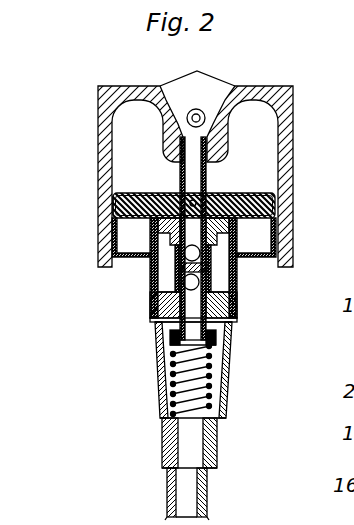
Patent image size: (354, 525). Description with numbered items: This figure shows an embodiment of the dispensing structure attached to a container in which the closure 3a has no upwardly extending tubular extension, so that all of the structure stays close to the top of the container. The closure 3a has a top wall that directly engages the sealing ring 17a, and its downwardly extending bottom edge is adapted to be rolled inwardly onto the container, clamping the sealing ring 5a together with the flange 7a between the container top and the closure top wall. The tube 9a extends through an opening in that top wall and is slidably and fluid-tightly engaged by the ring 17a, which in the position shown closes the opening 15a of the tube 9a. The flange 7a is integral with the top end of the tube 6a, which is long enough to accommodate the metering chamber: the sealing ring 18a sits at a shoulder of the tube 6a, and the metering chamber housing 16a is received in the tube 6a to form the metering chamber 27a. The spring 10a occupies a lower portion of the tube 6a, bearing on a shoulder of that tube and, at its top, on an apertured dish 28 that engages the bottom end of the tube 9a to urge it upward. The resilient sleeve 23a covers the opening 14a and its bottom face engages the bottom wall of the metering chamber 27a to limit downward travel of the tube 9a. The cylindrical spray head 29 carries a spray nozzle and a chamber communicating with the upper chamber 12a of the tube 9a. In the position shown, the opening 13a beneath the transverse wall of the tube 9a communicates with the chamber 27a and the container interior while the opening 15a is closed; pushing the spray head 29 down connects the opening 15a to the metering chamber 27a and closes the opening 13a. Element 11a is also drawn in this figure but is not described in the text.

The spray head 29 is at (270, 97).
The sealing ring 17a is at (155, 192).
The flange 7a is at (117, 192).
The sealing ring 5a is at (113, 217).
The upper chamber 12a is at (148, 244).
The metering chamber housing 16a is at (155, 273).
The sealing ring 18a is at (150, 302).
The tube 9a is at (207, 168).
The opening 15a is at (214, 197).
The closure 3a is at (272, 228).
The opening 14a is at (200, 252).
The resilient sleeve 23a is at (232, 267).
The metering chamber 27a is at (215, 281).
The opening 13a is at (233, 304).
The tube 6a is at (193, 323).
The spring cup 11a is at (207, 338).
The apertured dish 28 is at (213, 353).
The spring 10a is at (215, 405).